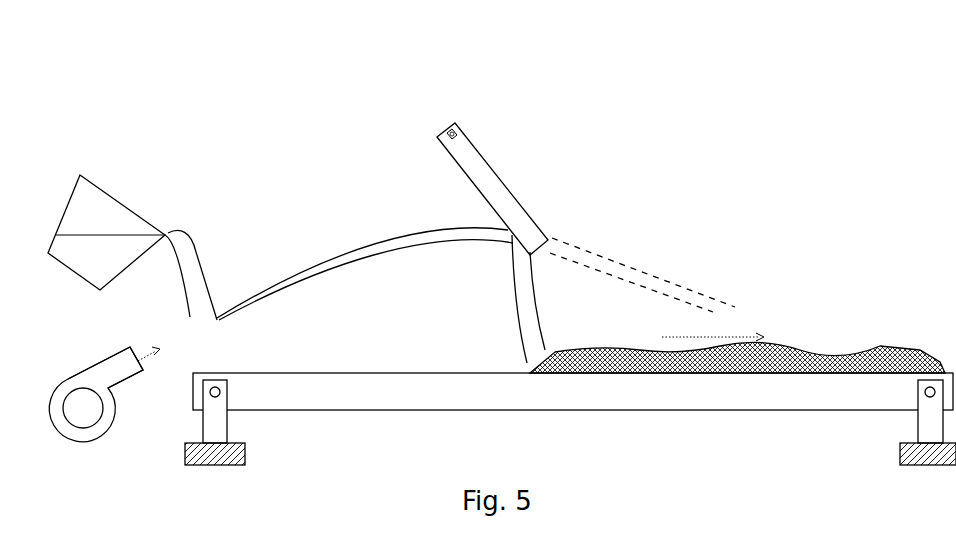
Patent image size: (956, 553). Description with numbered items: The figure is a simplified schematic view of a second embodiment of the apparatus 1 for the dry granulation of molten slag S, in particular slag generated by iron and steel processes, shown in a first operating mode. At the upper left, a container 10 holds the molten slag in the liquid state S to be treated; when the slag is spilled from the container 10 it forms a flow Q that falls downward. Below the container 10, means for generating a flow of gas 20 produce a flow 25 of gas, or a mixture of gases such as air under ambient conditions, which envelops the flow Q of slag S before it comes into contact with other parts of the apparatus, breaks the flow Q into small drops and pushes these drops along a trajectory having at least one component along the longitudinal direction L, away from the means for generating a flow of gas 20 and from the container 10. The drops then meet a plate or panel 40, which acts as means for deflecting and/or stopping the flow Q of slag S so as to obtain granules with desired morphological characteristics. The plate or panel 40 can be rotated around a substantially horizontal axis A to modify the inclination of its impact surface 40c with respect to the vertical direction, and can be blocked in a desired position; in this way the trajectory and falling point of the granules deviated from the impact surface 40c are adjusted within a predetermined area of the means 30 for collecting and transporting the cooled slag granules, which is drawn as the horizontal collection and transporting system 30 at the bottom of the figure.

The apparatus 1 is at (498, 278).
The container 10 is at (123, 202).
The molten slag S is at (110, 254).
The flow of slag Q is at (192, 243).
The means for generating a flow of gas 20 is at (100, 443).
The flow of gas 25 is at (132, 365).
The means for collecting and transporting 30 is at (573, 412).
The plate or panel 40 is at (502, 177).
The impact surface 40c is at (465, 188).
The horizontal axis A is at (452, 123).
The longitudinal direction L is at (737, 305).